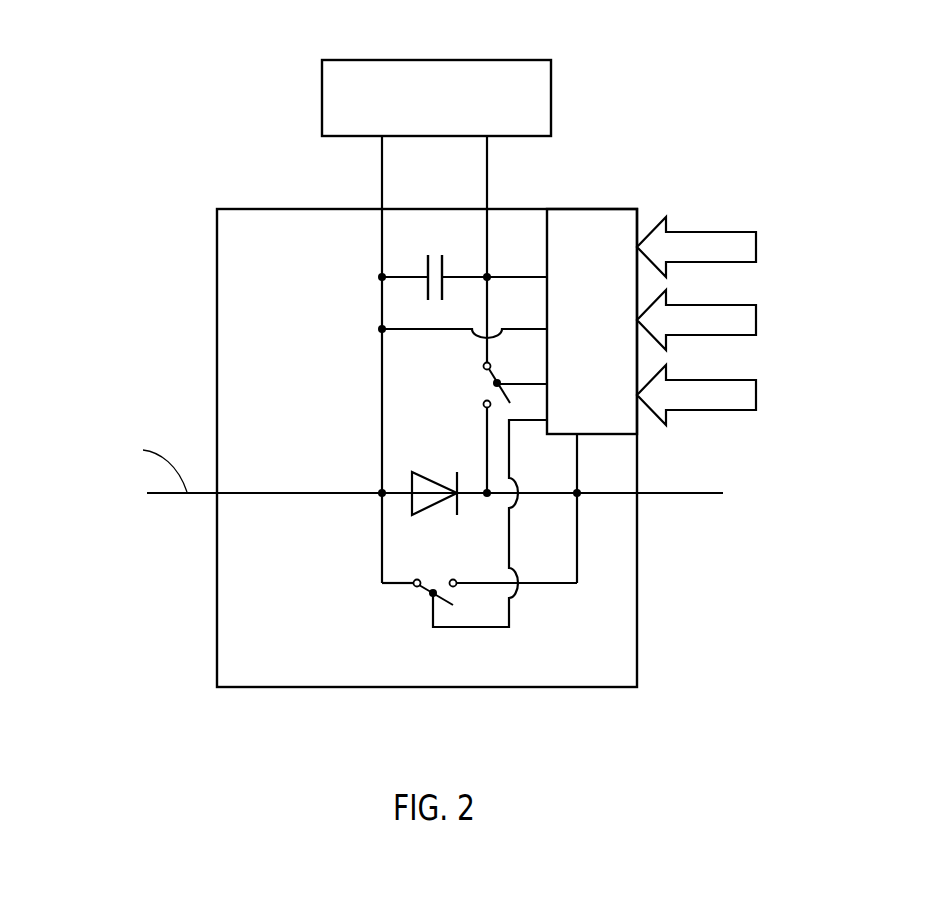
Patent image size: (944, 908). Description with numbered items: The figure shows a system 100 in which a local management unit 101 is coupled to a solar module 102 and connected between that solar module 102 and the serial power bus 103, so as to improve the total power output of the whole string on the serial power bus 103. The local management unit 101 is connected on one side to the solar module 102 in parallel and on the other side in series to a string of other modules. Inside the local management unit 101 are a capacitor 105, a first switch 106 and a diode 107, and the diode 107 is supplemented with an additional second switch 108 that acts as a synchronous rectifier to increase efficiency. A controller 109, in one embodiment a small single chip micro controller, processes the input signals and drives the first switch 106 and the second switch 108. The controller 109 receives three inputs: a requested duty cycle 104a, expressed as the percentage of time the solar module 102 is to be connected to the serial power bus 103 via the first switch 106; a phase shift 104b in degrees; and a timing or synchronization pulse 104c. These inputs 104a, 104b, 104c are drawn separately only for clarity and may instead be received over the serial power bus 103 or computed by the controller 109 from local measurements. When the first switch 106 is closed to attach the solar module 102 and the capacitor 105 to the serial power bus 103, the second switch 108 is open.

The system 100 is at (626, 43).
The local management unit 101 is at (348, 300).
The solar module 102 is at (510, 108).
The serial power bus 103 is at (166, 496).
The requested duty cycle 104a is at (767, 225).
The phase shift 104b is at (767, 299).
The timing or synchronization pulse 104c is at (767, 374).
The capacitor C1 105 is at (445, 262).
The switch Q1 106 is at (492, 372).
The diode D1 107 is at (458, 512).
The switch Q2 108 is at (423, 590).
The controller 109 is at (603, 343).